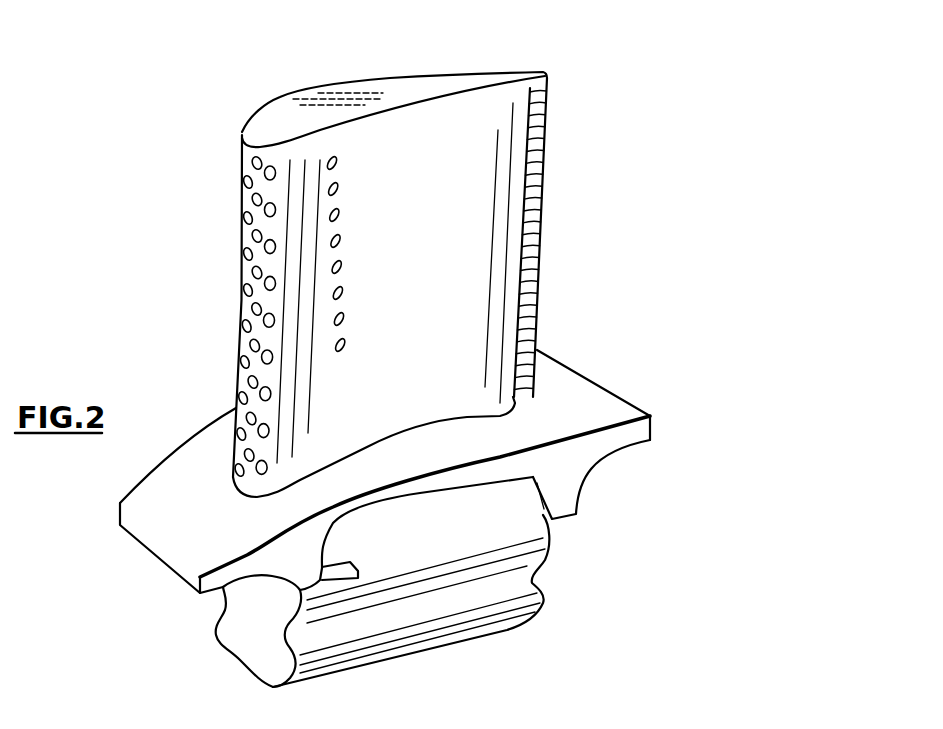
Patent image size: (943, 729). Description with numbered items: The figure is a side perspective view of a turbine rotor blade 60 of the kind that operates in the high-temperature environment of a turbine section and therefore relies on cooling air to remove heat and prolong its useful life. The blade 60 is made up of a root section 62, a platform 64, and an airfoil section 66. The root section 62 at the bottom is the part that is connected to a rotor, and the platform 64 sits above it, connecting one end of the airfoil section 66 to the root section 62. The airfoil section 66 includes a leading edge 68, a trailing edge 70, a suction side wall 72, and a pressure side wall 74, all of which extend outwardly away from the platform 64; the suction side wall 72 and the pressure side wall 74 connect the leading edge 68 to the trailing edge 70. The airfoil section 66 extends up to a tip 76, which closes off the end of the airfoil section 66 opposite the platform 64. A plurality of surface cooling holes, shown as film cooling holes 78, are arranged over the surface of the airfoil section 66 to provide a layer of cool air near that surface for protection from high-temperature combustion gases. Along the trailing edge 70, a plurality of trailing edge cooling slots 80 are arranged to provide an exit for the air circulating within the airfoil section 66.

The turbine rotor blade 60 is at (353, 345).
The root section 62 is at (243, 638).
The platform 64 is at (163, 513).
The airfoil section 66 is at (395, 250).
The leading edge 68 is at (240, 265).
The trailing edge 70 is at (574, 237).
The suction side wall 72 is at (337, 80).
The pressure side wall 74 is at (487, 110).
The tip 76 is at (278, 122).
The film cooling holes 78 is at (240, 212).
The trailing edge cooling slots 80 is at (532, 227).